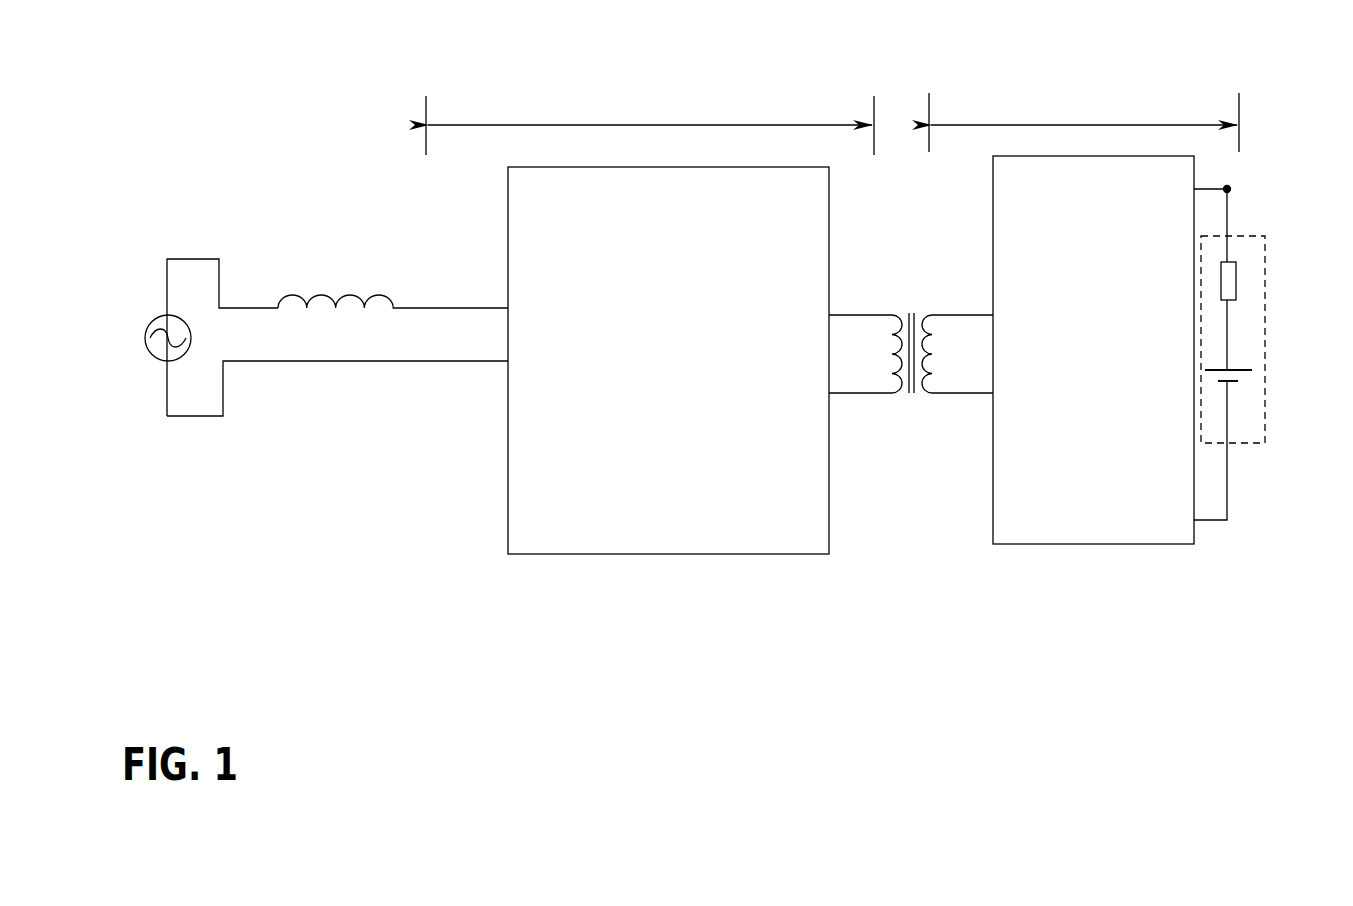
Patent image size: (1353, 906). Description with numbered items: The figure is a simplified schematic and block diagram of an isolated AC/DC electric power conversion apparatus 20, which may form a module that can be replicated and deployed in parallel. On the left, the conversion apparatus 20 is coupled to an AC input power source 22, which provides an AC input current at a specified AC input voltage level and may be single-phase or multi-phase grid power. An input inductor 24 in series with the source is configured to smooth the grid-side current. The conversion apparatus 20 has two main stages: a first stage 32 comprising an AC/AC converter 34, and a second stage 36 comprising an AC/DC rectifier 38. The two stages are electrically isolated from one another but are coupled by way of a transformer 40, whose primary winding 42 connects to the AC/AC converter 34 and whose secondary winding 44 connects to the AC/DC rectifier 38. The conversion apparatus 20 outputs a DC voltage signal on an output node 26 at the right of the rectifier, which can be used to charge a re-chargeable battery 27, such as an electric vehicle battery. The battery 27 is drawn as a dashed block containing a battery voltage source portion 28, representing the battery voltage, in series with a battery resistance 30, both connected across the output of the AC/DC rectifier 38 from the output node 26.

The isolated AC/DC electric power conversion apparatus 20 is at (824, 70).
The AC input power source 22 is at (157, 318).
The input inductor 24 is at (327, 295).
The output node 26 is at (1229, 183).
The re-chargeable battery 27 is at (1265, 420).
The battery voltage source portion 28 is at (1238, 370).
The battery resistance 30 is at (1236, 285).
The first stage 32 is at (582, 123).
The AC/AC converter 34 is at (652, 352).
The second stage 36 is at (1067, 125).
The AC/DC rectifier 38 is at (1079, 363).
The transformer 40 is at (911, 316).
The primary winding 42 is at (898, 352).
The secondary winding 44 is at (926, 360).